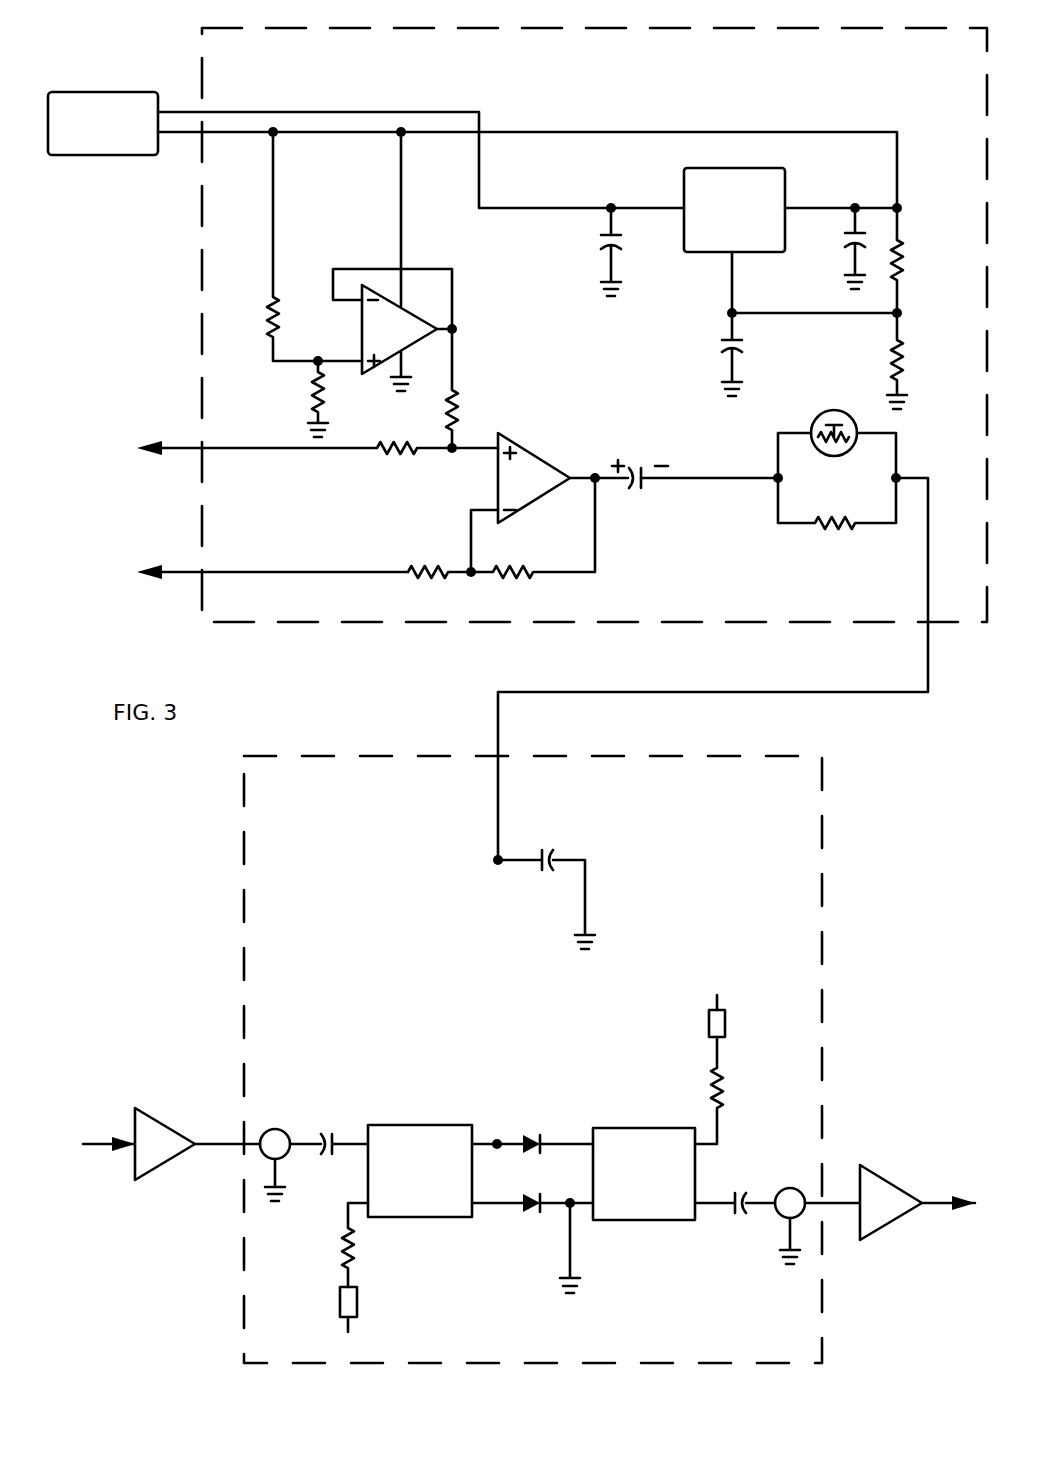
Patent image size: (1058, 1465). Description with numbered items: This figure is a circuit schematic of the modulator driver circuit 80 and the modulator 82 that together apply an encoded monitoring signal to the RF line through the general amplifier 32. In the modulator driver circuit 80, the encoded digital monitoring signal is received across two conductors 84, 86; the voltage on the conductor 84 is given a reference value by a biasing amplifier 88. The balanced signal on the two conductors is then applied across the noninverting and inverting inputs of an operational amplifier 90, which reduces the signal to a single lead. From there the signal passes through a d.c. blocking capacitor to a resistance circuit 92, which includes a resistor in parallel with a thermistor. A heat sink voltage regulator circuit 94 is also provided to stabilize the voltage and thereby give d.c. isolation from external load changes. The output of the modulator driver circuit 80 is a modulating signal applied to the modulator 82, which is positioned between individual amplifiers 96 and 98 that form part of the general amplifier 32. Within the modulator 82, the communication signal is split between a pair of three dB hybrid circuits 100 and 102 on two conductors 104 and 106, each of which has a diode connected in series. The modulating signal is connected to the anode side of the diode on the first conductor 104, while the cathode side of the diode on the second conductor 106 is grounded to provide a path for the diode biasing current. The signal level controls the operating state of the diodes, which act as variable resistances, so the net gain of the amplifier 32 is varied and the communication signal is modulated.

The amplifier 32 is at (143, 862).
The modulator driver circuit 80 is at (650, 27).
The modulator circuit 82 is at (432, 755).
The conductor 84 is at (281, 452).
The conductor 86 is at (271, 572).
The biasing amplifier 88 is at (497, 355).
The operational amplifier 90 is at (535, 456).
The resistance circuit 92 is at (773, 466).
The heat sink voltage regulator circuit 94 is at (716, 270).
The individual amplifier 96 is at (160, 1121).
The individual amplifier 98 is at (888, 1180).
The 3 dB hybrid circuit 100 is at (412, 1125).
The 3 dB hybrid circuit 102 is at (630, 1128).
The conductor 104 is at (493, 1150).
The conductor 106 is at (488, 1208).